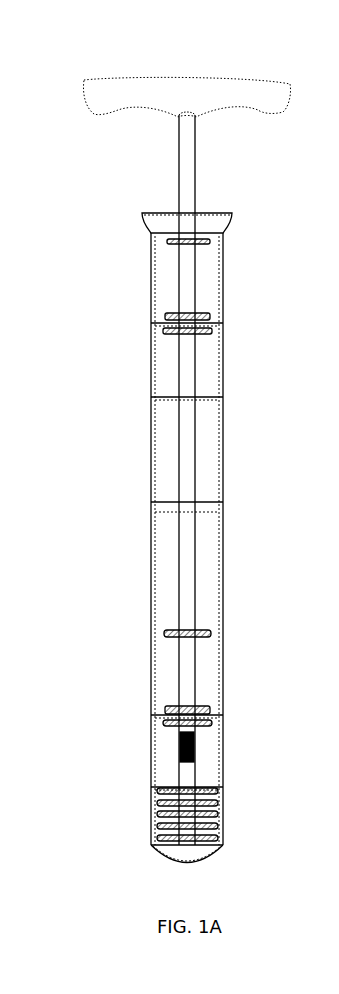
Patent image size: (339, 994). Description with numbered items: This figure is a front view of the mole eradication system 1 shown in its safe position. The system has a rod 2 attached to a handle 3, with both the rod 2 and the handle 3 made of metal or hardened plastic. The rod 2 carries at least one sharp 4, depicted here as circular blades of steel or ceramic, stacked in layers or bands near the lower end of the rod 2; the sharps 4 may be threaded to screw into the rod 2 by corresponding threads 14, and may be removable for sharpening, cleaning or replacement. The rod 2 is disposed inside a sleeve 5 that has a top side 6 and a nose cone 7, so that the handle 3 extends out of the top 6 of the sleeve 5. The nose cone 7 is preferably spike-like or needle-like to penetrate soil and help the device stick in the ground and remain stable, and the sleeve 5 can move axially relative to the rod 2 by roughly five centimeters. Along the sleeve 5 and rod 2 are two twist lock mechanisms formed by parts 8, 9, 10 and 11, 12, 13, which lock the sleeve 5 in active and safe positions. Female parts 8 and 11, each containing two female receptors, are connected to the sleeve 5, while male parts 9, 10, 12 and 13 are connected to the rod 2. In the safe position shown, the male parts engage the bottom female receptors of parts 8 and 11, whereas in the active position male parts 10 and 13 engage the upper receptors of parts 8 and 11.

The mole eradication system 1 is at (156, 46).
The rod 2 is at (177, 493).
The handle 3 is at (82, 92).
The sharp 4 is at (157, 812).
The sleeve 5 is at (151, 553).
The top side 6 is at (162, 213).
The nose cone 7 is at (161, 858).
The twist lock part 8 is at (162, 711).
The twist lock part 9 is at (174, 729).
The twist lock part 10 is at (163, 633).
The twist lock part 11 is at (169, 316).
The twist lock part 12 is at (171, 334).
The twist lock part 13 is at (171, 242).
The threads 14 is at (177, 752).